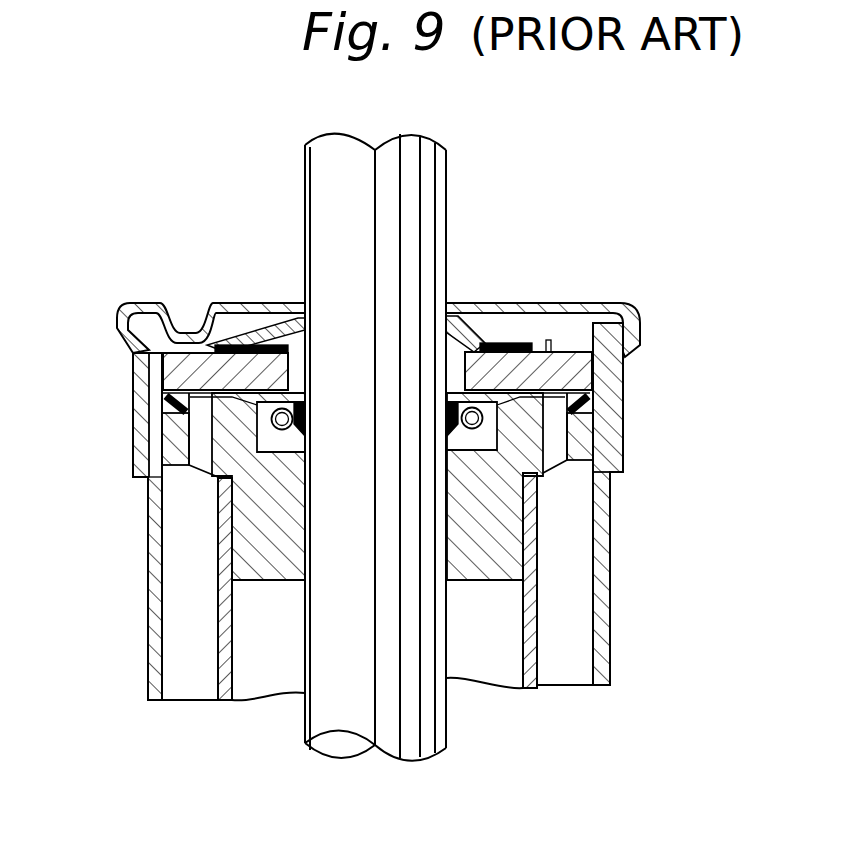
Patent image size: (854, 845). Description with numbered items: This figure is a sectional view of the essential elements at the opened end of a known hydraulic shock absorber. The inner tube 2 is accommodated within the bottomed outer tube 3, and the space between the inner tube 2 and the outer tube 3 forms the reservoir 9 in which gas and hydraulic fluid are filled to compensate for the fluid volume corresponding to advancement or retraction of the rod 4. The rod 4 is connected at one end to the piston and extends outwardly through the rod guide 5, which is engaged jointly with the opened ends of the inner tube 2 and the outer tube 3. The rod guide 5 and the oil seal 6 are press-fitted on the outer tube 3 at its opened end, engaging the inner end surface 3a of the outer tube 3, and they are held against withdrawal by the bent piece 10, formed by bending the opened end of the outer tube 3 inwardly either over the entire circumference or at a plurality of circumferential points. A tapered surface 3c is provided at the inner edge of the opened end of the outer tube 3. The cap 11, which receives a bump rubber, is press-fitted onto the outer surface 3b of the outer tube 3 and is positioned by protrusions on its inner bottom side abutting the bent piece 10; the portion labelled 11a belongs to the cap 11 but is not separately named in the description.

The inner tube 2 is at (224, 696).
The outer tube 3 is at (148, 610).
The inner end surface 3a is at (162, 447).
The outer surface 3b is at (622, 404).
The tapered surface 3c is at (553, 351).
The rod 4 is at (323, 185).
The rod guide 5 is at (510, 528).
The oil seal 6 is at (540, 343).
The reservoir 9 is at (568, 660).
The bent piece 10 is at (235, 312).
The cap 11 is at (622, 300).
The cover plate projection 11a is at (143, 325).